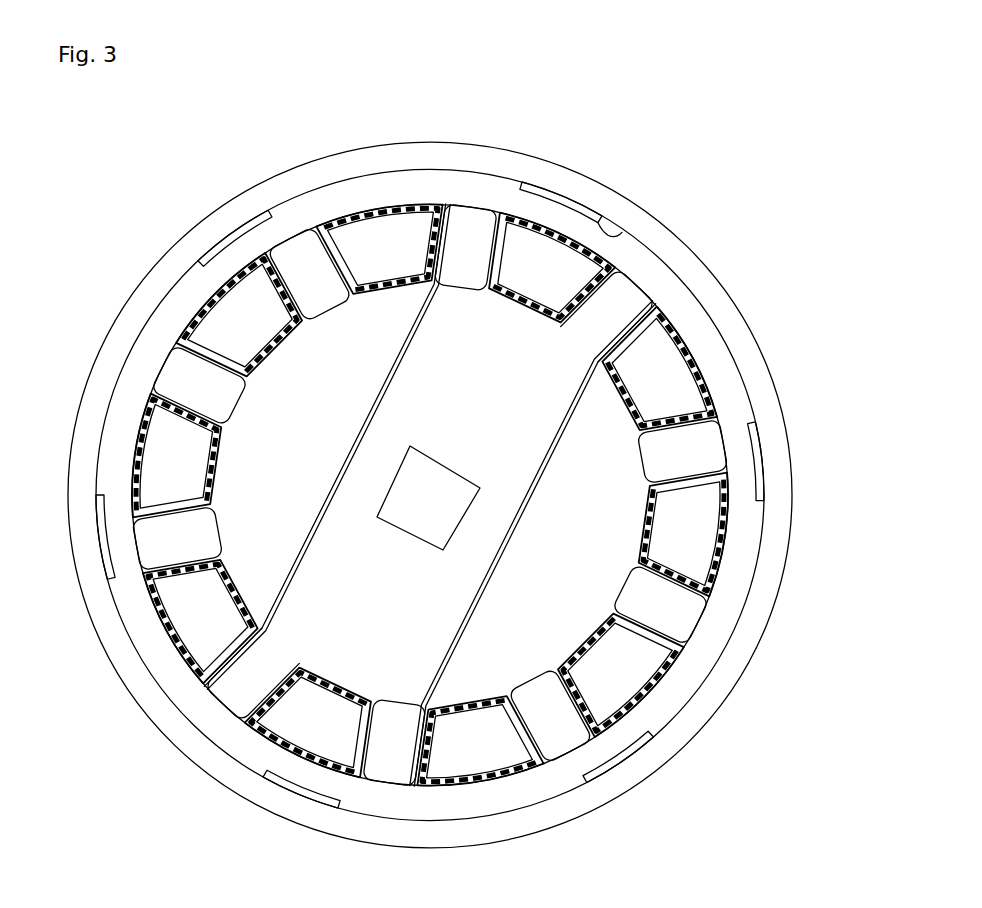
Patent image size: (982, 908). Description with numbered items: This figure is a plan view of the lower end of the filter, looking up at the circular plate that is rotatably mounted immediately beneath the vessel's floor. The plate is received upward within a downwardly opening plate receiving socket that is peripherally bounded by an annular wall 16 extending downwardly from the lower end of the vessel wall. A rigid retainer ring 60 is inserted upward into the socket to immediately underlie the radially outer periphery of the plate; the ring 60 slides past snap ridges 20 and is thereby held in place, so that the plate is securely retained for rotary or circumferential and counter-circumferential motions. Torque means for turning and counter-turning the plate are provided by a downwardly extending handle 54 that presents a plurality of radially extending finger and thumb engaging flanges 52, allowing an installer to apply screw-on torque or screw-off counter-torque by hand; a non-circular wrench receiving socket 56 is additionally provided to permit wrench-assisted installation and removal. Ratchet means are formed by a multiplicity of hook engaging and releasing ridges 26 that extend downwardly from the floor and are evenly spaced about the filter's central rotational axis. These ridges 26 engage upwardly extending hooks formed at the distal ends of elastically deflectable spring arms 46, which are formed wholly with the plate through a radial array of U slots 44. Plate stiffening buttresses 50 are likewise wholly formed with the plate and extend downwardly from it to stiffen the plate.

The annular wall 16 is at (460, 155).
The snap ridges 20 is at (604, 228).
The hook engaging and releasing ridges 26 is at (208, 290).
The U slots 44 is at (180, 330).
The spring arms 46 is at (260, 310).
The plate stiffening buttresses 50 is at (303, 262).
The finger and thumb engaging flanges 52 is at (445, 228).
The handle 54 is at (527, 467).
The wrench receiving socket 56 is at (450, 510).
The retainer ring 60 is at (665, 288).